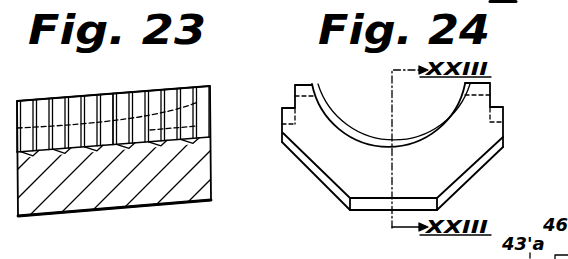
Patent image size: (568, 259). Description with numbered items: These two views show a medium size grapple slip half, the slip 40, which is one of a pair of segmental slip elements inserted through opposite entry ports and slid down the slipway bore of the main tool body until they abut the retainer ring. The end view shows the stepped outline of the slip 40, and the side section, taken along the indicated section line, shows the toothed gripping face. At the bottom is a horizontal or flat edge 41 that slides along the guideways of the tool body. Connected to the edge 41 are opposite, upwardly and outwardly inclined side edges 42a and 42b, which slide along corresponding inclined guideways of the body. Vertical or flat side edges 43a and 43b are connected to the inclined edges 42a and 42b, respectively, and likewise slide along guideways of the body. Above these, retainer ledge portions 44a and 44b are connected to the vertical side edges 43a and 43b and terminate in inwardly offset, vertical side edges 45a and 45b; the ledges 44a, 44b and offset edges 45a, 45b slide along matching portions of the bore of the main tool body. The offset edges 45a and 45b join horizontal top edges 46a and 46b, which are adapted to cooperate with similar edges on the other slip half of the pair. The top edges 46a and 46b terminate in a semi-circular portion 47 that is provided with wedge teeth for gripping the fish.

In FIG. 23, the slip 40 is at (148, 197).
In FIG. 24, the slip 40 is at (348, 152).
In FIG. 23, the bottom edge 41 is at (88, 213).
In FIG. 24, the bottom edge 41 is at (377, 212).
In FIG. 24, the inclined side edge 42a is at (316, 175).
In FIG. 24, the inclined side edge 42b is at (476, 172).
In FIG. 24, the vertical side edge 43a is at (282, 130).
In FIG. 23, the vertical side edge 43b is at (197, 126).
In FIG. 24, the vertical side edge 43b is at (502, 128).
In FIG. 24, the retainer ledge portion 44a is at (291, 106).
In FIG. 23, the retainer ledge portion 44b is at (118, 118).
In FIG. 24, the retainer ledge portion 44b is at (497, 107).
In FIG. 24, the inwardly offset side edge 45a is at (295, 88).
In FIG. 23, the inwardly offset side edge 45b is at (198, 102).
In FIG. 24, the inwardly offset side edge 45b is at (490, 85).
In FIG. 24, the top edge 46a is at (305, 85).
In FIG. 23, the top edge 46b is at (183, 85).
In FIG. 24, the top edge 46b is at (490, 82).
In FIG. 23, the semi-circular portion 47 is at (62, 108).
In FIG. 24, the semi-circular portion 47 is at (434, 129).